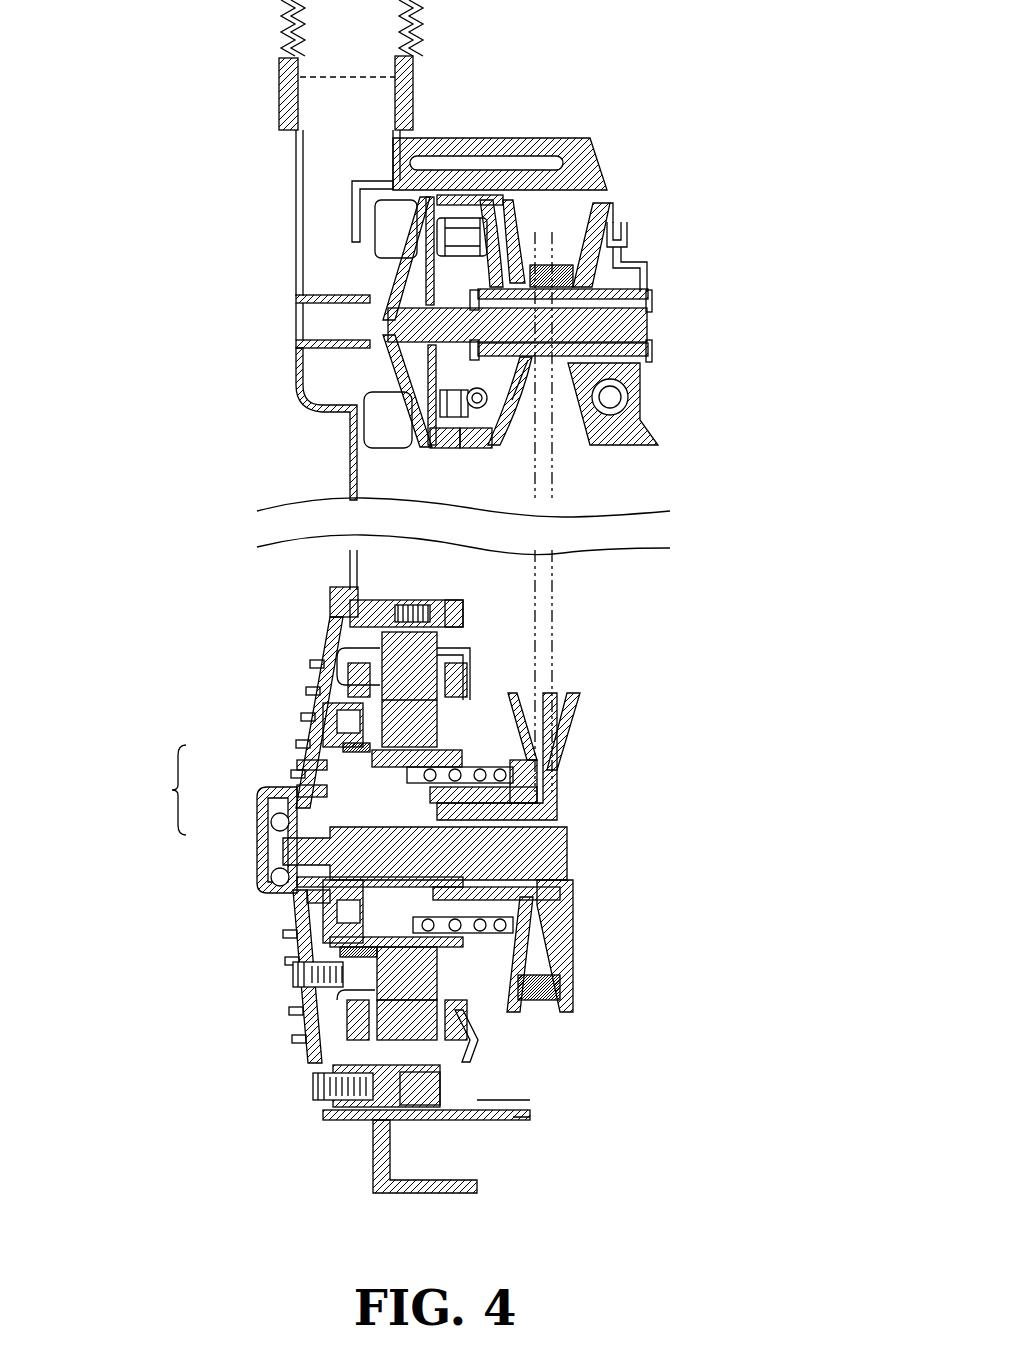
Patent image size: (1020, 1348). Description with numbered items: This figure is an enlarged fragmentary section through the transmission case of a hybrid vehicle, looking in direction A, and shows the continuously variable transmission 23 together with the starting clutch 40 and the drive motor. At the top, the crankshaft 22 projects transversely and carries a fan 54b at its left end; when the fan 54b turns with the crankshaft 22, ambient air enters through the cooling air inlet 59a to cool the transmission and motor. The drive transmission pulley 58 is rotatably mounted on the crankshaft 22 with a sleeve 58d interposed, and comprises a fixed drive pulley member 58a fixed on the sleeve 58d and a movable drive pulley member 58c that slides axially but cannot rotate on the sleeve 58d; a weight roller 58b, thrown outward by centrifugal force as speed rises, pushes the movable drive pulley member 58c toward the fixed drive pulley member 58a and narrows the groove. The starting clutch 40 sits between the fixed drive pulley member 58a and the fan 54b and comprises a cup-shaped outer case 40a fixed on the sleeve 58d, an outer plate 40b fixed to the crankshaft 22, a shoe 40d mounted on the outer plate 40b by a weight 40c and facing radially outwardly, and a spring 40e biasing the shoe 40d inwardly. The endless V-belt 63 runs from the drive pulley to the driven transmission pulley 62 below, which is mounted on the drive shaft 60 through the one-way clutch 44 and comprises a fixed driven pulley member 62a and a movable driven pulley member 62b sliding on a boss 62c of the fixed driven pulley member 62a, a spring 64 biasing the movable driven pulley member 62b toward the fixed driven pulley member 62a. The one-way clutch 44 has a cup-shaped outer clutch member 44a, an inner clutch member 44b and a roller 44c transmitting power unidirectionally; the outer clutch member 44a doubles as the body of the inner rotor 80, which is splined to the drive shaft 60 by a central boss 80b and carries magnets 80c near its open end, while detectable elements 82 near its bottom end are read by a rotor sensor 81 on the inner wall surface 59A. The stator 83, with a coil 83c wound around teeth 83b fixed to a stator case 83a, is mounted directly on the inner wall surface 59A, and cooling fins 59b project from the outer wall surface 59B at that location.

The crankshaft 22 is at (562, 326).
The continuously variable transmission 23 is at (560, 502).
The starting clutch 40 is at (461, 303).
The outer case 40a is at (504, 424).
The outer plate 40b is at (408, 374).
The weight 40c is at (442, 450).
The shoe 40d is at (465, 452).
The spring 40e is at (515, 430).
The one-way clutch 44 is at (236, 819).
The outer clutch member 44a is at (305, 763).
The inner clutch member 44b is at (285, 822).
The roller 44c is at (305, 790).
The fan 54b is at (380, 244).
The drive transmission pulley 58 is at (607, 288).
The fixed drive pulley member 58a is at (522, 218).
The weight roller 58b is at (612, 400).
The movable drive pulley member 58c is at (606, 205).
The sleeve 58d is at (640, 308).
The cooling air inlet 59a is at (345, 93).
The inner wall surface 59A is at (353, 679).
The outer wall surface 59B is at (355, 990).
The cooling fins 59b is at (300, 666).
The drive shaft 60 is at (560, 848).
The driven transmission pulley 62 is at (545, 715).
The fixed driven pulley member 62a is at (579, 698).
The movable driven pulley member 62b is at (518, 690).
The boss 62c is at (560, 810).
The endless V-belt 63 is at (553, 583).
The spring 64 is at (478, 773).
The inner rotor 80 is at (398, 944).
The central boss 80b is at (305, 906).
The magnets 80c is at (430, 972).
The rotor sensor 81 is at (300, 703).
The detectable elements 82 is at (300, 742).
The stator 83 is at (426, 1106).
The stator case 83a is at (432, 1112).
The teeth 83b is at (385, 1152).
The coil 83c is at (472, 1040).
The direction A is at (204, 520).